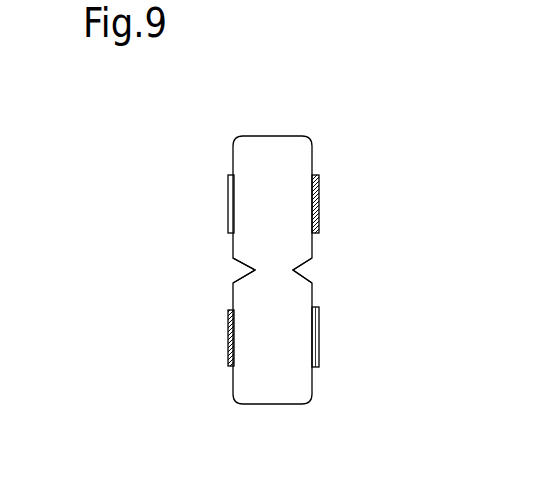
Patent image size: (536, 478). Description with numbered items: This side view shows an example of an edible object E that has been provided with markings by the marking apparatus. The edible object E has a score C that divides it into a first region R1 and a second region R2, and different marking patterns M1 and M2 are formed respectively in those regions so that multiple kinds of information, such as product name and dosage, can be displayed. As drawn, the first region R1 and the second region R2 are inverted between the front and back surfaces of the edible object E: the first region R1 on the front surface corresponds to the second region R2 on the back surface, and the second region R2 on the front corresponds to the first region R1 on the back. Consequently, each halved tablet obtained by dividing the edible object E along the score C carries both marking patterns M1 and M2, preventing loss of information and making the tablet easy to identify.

The edible object E is at (260, 136).
The marking pattern M1 is at (228, 192).
The marking pattern M2 is at (319, 195).
The first region R1 is at (213, 237).
The second region R2 is at (338, 232).
The score C is at (242, 266).